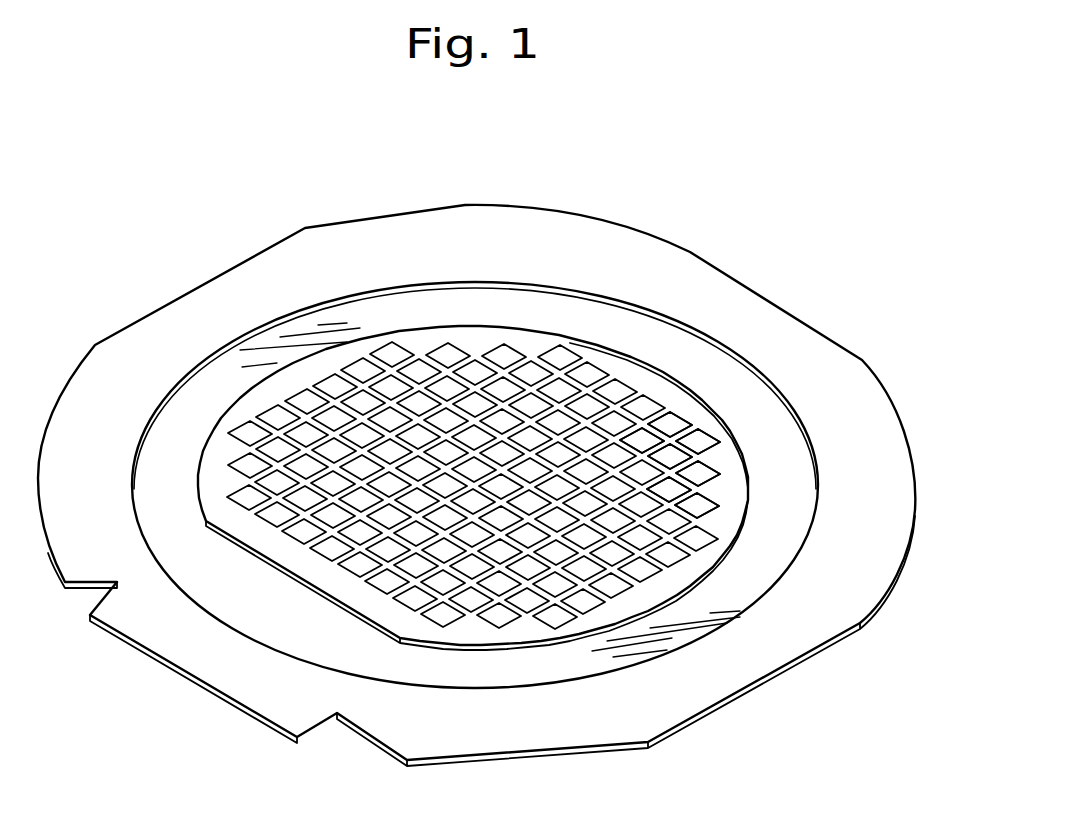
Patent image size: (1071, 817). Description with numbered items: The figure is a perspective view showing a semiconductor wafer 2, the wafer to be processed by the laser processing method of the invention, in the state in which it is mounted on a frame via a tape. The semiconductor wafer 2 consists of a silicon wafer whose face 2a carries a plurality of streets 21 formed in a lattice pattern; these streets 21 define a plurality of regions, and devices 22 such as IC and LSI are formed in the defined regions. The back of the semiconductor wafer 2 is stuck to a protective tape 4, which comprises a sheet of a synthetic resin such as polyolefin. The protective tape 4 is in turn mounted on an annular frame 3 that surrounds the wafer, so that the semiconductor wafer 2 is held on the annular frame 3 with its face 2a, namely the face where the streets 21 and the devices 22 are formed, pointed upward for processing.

The semiconductor wafer 2 is at (241, 397).
The face 2a is at (648, 378).
The streets 21 is at (550, 345).
The devices 22 is at (702, 437).
The annular frame 3 is at (863, 415).
The protective tape 4 is at (187, 427).